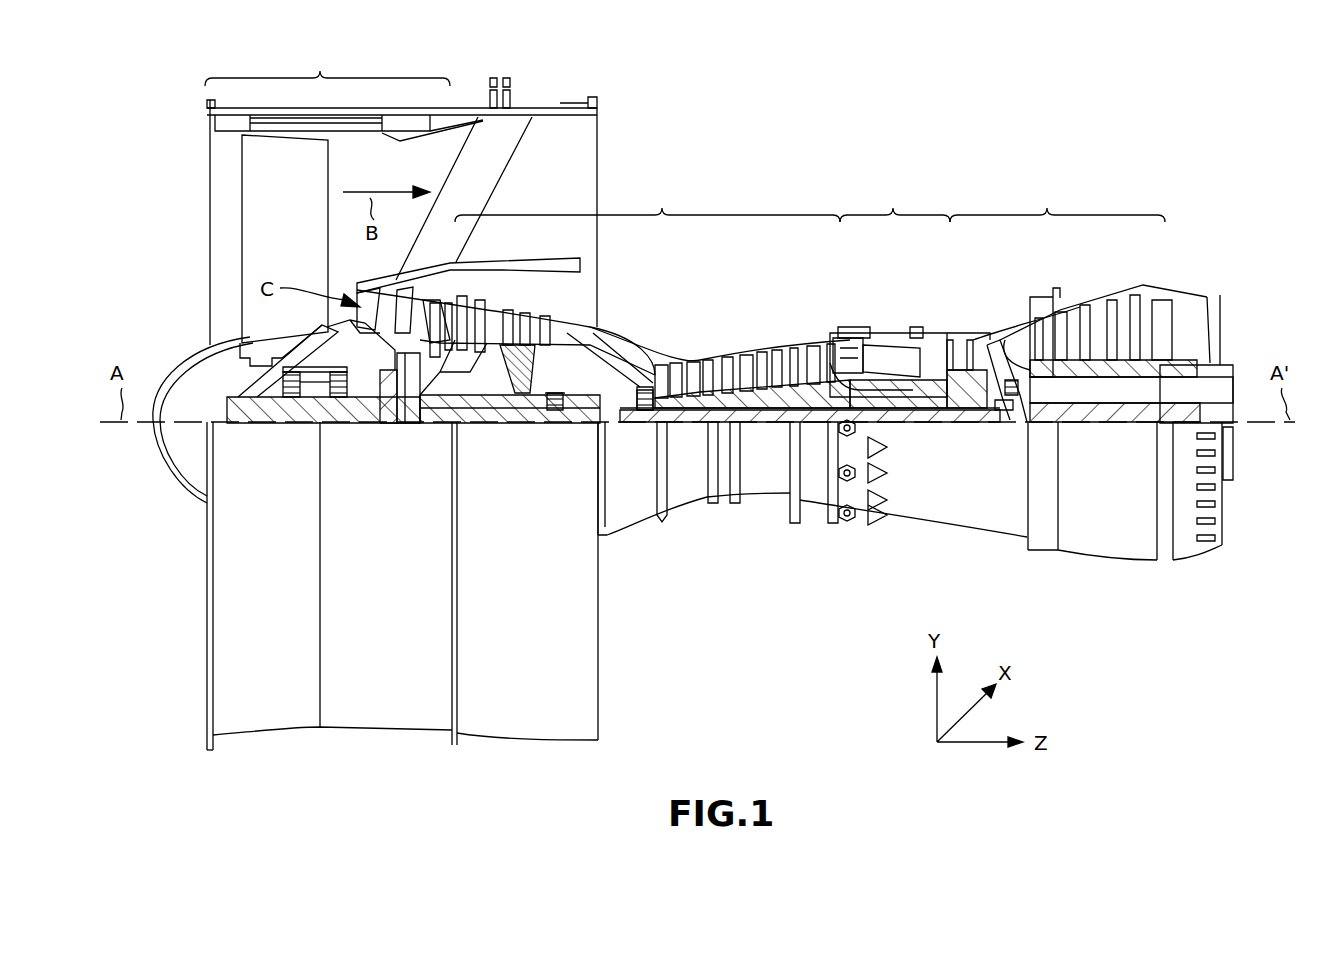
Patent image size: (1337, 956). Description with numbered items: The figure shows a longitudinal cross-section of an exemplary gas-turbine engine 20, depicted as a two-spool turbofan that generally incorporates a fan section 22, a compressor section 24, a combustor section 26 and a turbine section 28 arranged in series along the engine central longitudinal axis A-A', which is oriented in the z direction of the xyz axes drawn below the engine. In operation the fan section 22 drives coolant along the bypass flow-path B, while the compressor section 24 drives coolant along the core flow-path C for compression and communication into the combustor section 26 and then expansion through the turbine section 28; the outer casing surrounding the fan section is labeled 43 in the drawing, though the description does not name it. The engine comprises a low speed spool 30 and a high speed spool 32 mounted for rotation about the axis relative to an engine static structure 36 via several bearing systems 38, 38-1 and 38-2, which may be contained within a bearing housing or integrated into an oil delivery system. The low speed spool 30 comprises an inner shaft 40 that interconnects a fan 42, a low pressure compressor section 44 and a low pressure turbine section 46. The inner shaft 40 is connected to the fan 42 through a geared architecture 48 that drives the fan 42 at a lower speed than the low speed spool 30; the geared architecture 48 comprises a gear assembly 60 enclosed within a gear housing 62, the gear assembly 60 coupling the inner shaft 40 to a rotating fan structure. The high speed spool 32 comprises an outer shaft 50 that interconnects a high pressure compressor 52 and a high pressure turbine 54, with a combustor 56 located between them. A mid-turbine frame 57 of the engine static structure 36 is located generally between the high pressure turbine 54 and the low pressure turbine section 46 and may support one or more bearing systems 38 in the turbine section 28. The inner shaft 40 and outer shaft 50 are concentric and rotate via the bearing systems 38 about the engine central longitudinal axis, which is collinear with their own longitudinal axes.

The gas-turbine engine 20 is at (938, 152).
The fan section 22 is at (401, 162).
The compressor section 24 is at (647, 201).
The combustor section 26 is at (895, 201).
The turbine section 28 is at (1057, 201).
The low speed spool 30 is at (770, 430).
The high speed spool 32 is at (810, 390).
The engine static structure 36 is at (383, 712).
The bearing system 38 is at (1003, 424).
The bearing system 38-1 is at (292, 410).
The bearing system 38-2 is at (553, 413).
The inner shaft 40 is at (620, 427).
The fan 42 is at (290, 236).
The nacelle 43 is at (250, 178).
The low pressure compressor section 44 is at (530, 320).
The low pressure turbine section 46 is at (1097, 307).
The geared architecture 48 is at (413, 432).
The outer shaft 50 is at (887, 403).
The high pressure compressor 52 is at (750, 390).
The high pressure turbine 54 is at (960, 350).
The combustor 56 is at (885, 362).
The mid-turbine frame 57 is at (1008, 340).
The gear assembly 60 is at (453, 413).
The gear housing 62 is at (392, 358).